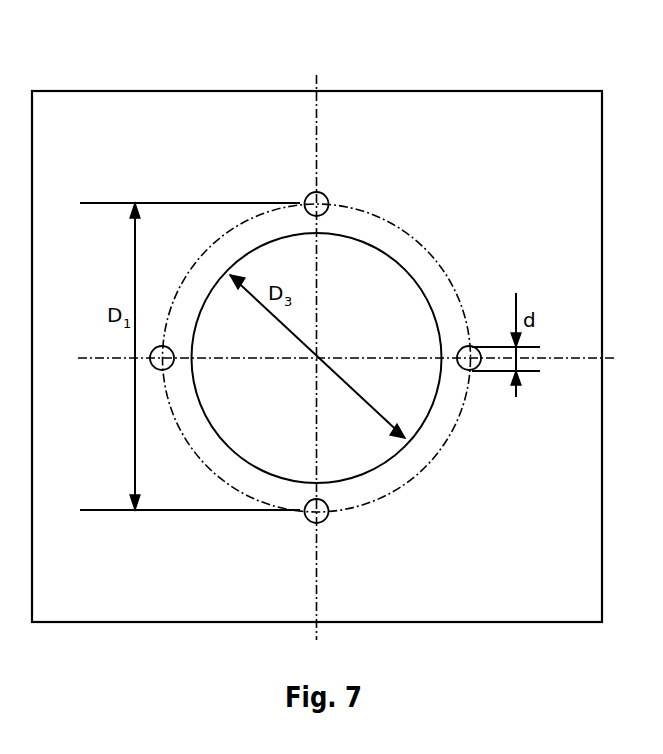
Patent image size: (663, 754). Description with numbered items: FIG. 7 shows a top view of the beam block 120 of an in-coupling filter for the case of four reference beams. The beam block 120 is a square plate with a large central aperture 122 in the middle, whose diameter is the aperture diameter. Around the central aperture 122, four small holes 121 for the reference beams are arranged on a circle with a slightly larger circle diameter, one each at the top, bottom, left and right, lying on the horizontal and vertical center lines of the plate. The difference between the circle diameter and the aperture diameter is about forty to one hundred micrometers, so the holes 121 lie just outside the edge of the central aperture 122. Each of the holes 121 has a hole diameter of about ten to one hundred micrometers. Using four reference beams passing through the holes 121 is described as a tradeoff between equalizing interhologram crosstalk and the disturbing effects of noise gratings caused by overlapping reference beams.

The beam block 120 is at (472, 88).
The holes 121 is at (329, 194).
The central aperture 122 is at (393, 257).